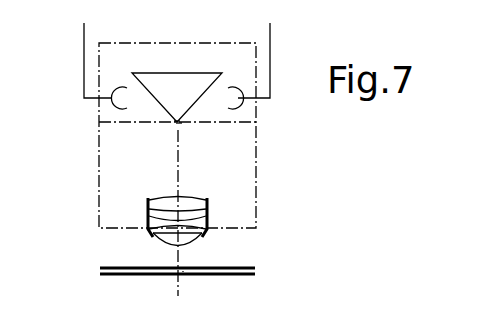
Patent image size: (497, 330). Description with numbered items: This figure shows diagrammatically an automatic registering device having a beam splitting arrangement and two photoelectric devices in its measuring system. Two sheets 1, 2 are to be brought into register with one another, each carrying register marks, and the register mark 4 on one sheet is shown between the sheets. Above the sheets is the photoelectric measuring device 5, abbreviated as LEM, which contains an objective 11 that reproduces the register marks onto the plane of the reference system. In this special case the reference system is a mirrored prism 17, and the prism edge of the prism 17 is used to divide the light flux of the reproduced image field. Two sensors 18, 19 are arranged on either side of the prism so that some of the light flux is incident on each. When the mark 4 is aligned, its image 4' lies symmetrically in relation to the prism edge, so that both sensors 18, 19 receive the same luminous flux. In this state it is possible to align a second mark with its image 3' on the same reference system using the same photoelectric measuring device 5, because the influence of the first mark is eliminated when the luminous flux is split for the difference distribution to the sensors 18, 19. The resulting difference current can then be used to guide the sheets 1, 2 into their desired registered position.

The sheet 1 is at (254, 277).
The sheet 2 is at (254, 266).
The image of register mark 3' is at (181, 211).
The register mark 4 is at (193, 285).
The image of register mark 4' is at (166, 133).
The photoelectric measuring device 5 is at (257, 179).
The objective 11 is at (208, 211).
The mirrored prism 17 is at (193, 80).
The sensor 18 is at (113, 104).
The sensor 19 is at (242, 105).